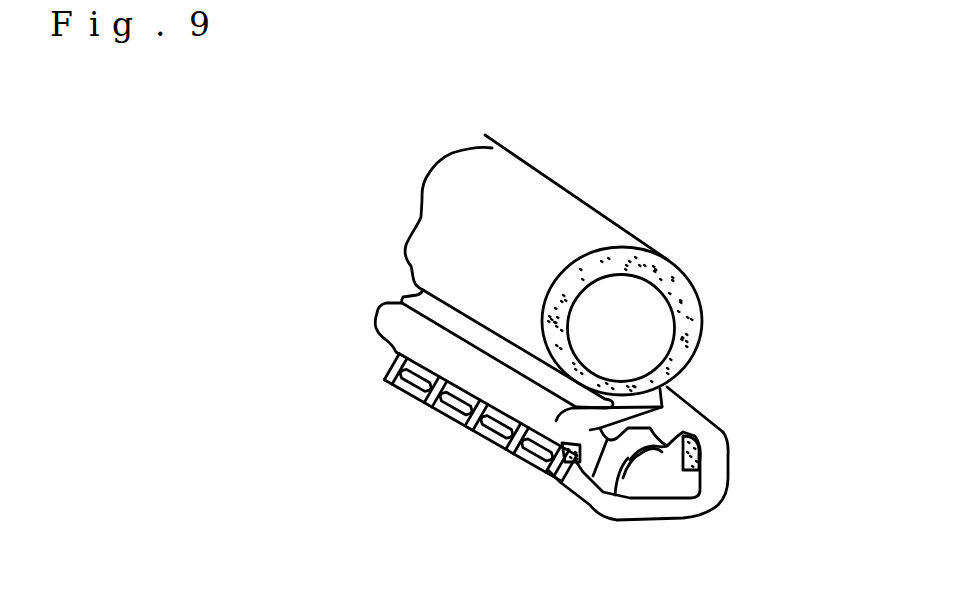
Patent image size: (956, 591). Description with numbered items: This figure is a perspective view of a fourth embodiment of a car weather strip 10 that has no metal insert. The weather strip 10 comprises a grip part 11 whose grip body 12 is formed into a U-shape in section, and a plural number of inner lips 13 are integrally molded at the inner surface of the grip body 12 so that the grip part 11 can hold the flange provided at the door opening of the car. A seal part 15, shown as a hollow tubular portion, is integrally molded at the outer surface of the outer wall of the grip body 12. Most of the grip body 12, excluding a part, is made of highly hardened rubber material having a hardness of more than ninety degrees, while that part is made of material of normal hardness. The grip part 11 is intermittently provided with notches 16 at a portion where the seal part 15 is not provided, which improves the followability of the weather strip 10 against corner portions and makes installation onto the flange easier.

The weather strip 10 is at (733, 331).
The grip part 11 is at (730, 457).
The grip body 12 is at (713, 477).
The inner lips 13 is at (556, 428).
The seal part 15 is at (653, 265).
The notches 16 is at (390, 357).